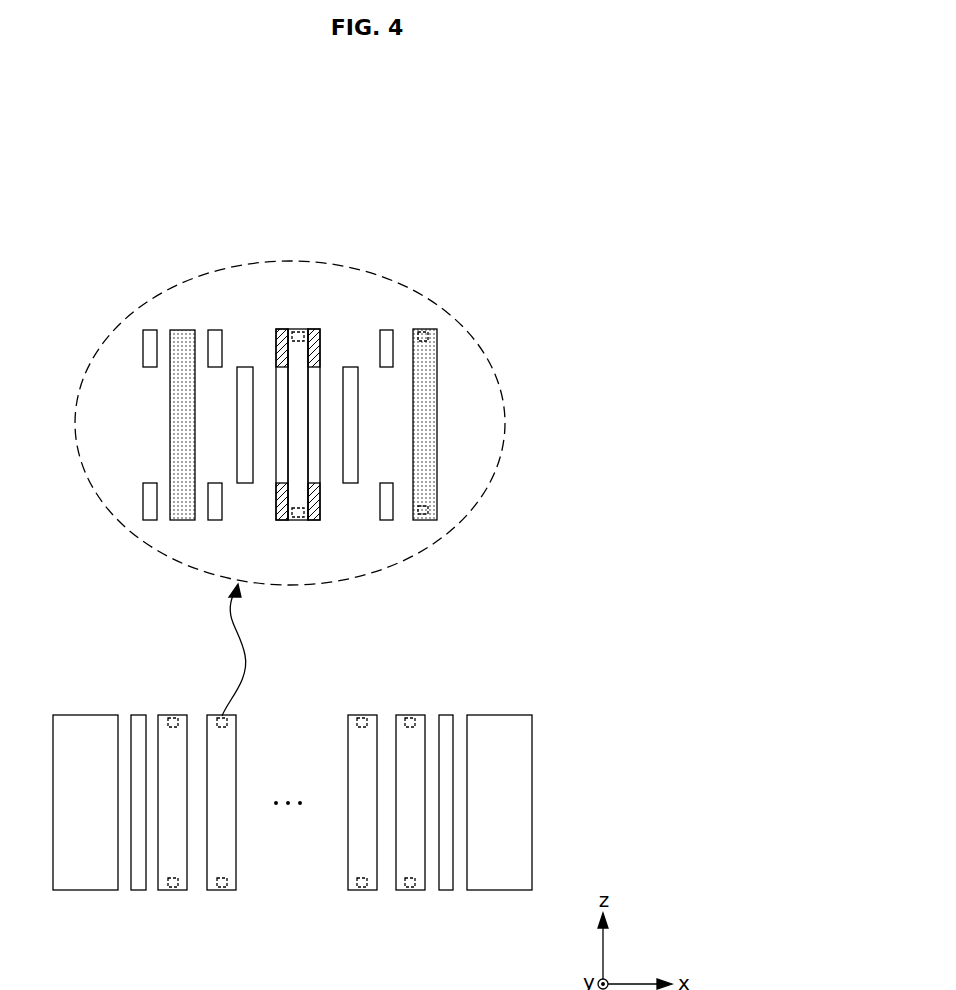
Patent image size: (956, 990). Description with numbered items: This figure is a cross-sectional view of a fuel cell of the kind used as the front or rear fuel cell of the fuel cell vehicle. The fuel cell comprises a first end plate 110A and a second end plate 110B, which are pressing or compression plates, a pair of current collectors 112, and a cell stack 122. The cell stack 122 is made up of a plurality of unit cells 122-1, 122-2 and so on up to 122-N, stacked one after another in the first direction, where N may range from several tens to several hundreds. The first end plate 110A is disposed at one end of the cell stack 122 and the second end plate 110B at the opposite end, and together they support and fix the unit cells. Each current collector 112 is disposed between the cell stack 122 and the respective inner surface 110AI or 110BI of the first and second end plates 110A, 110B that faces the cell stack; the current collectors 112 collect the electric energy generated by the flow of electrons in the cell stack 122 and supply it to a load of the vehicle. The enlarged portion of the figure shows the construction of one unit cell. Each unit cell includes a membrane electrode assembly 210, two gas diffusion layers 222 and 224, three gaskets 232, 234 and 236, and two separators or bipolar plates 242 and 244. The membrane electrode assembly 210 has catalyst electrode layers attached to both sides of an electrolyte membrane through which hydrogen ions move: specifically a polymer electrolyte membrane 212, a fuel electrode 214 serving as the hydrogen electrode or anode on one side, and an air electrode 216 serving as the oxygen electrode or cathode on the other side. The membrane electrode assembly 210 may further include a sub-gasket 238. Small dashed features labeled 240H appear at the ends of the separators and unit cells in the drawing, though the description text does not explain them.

The membrane electrode assembly 210 is at (296, 327).
The polymer electrolyte membrane 212 is at (297, 357).
The fuel electrode 214 is at (282, 388).
The air electrode 216 is at (307, 380).
The gas diffusion layer 222 is at (245, 367).
The gas diffusion layer 224 is at (349, 366).
The gasket 232 is at (215, 330).
The gasket 234 is at (150, 330).
The gasket 236 is at (386, 330).
The sub-gasket 238 is at (276, 506).
The separator 242 is at (182, 330).
The separator 244 is at (425, 330).
The hole 240H is at (422, 338).
The first end plate 110A is at (85, 715).
The second end plate 110B is at (506, 715).
The current collector 112 is at (138, 715).
The cell stack 122 is at (294, 852).
The unit cell 122-1 is at (165, 891).
The unit cell 122-2 is at (232, 891).
The unit cell 122-N is at (421, 830).
The inner surface of first end plate 110AI is at (121, 891).
The inner surface of second end plate 110BI is at (462, 891).